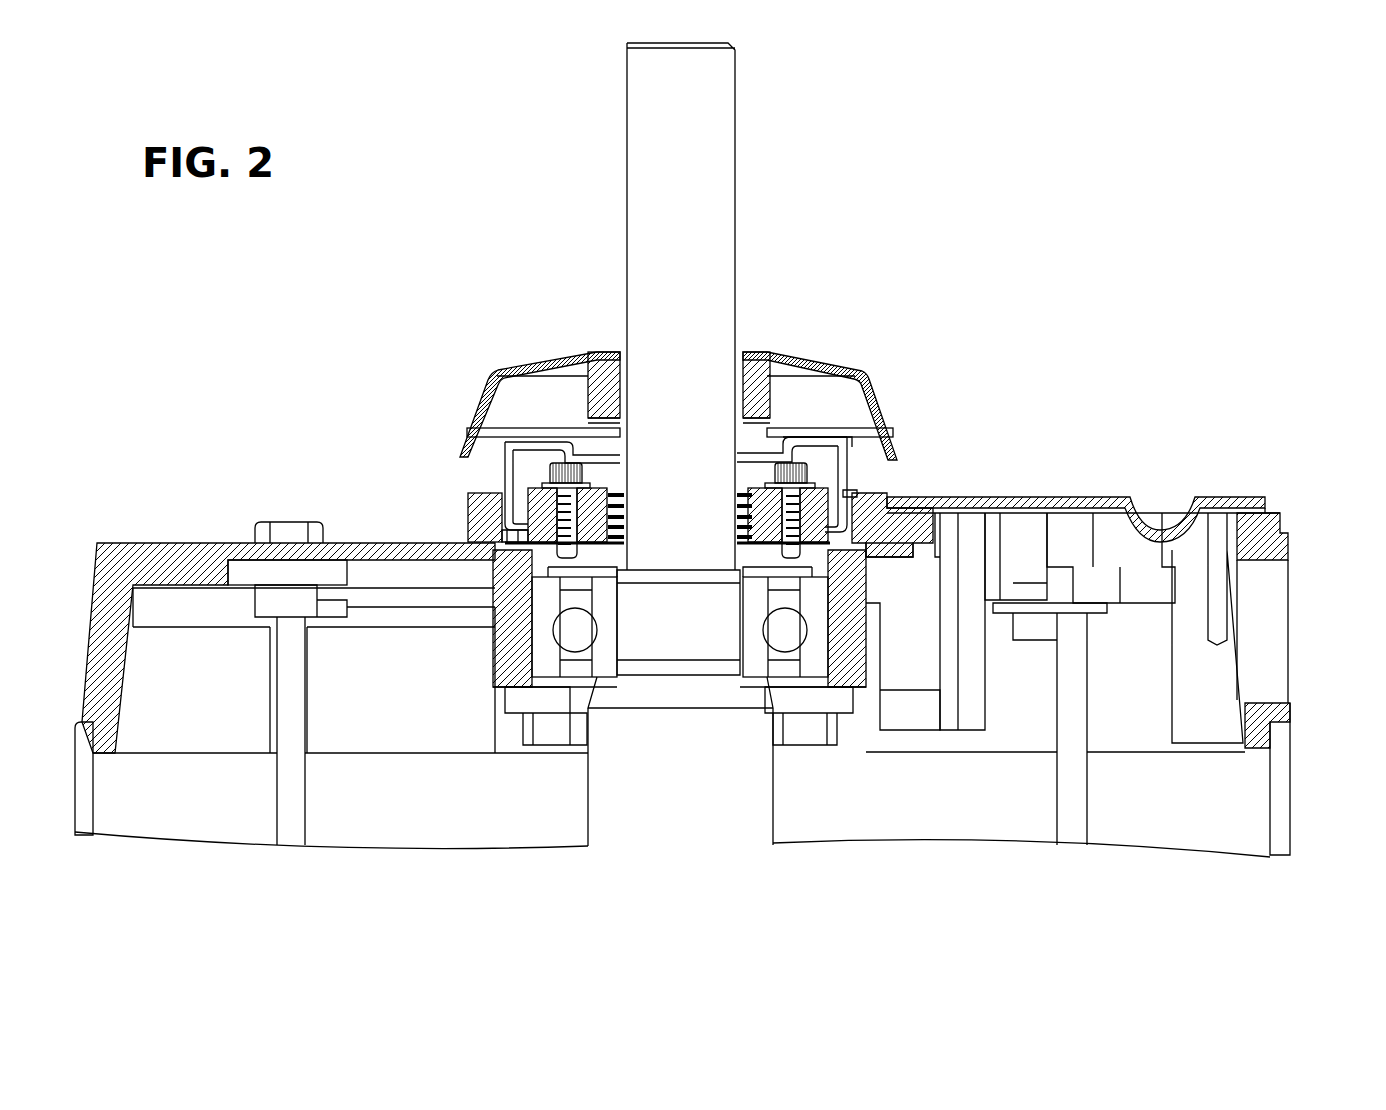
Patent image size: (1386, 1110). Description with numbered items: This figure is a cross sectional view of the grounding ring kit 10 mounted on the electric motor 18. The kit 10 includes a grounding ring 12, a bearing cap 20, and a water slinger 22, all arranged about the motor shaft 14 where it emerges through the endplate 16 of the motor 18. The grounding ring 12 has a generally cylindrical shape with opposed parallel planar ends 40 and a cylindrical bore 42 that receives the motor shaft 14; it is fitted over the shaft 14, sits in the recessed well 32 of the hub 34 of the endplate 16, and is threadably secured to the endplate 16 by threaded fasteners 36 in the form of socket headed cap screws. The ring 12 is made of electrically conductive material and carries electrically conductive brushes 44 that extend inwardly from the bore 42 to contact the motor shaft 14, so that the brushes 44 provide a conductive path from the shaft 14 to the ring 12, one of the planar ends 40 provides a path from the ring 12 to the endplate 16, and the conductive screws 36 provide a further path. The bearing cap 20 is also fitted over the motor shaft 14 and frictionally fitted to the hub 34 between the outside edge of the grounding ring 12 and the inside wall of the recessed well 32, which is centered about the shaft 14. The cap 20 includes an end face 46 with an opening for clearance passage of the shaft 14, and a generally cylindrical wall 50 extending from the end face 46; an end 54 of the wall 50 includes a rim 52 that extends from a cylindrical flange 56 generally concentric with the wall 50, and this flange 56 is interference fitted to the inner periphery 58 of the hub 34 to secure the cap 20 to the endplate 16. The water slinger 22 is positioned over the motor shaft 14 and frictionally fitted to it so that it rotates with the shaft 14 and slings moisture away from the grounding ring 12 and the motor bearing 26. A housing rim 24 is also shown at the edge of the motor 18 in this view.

The grounding ring kit 10 is at (484, 200).
The grounding ring 12 is at (535, 497).
The motor shaft 14 is at (638, 270).
The endplate 16 is at (148, 543).
The electric motor 18 is at (1306, 575).
The bearing cap 20 is at (518, 433).
The water slinger 22 is at (503, 372).
The housing rim 24 is at (1292, 770).
The motor bearing 26 is at (831, 637).
The recessed well 32 is at (510, 582).
The hub 34 is at (487, 522).
The threaded fasteners 36 is at (558, 462).
The parallel planar ends 40 is at (760, 545).
The cylindrical bore 42 is at (652, 488).
The electrically conductive brushes 44 is at (737, 497).
The end face 46 is at (830, 433).
The cylindrical wall 50 is at (847, 440).
The rim 52 is at (857, 490).
The end of the wall 54 is at (866, 577).
The cylindrical flange 56 is at (880, 503).
The inner periphery 58 is at (508, 548).